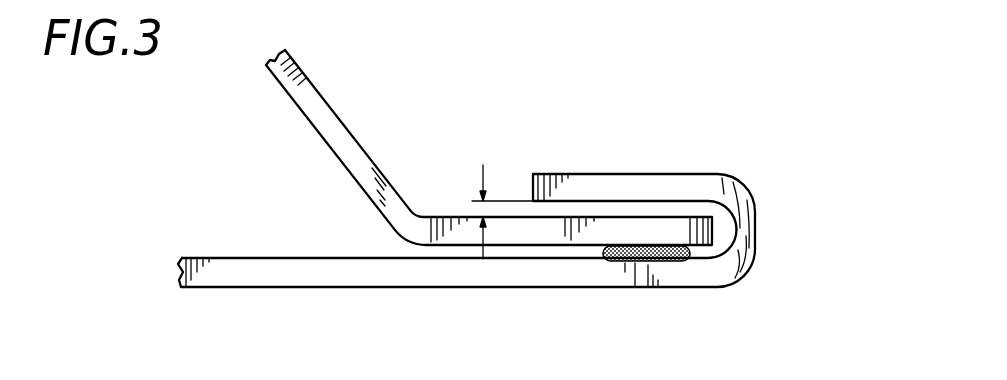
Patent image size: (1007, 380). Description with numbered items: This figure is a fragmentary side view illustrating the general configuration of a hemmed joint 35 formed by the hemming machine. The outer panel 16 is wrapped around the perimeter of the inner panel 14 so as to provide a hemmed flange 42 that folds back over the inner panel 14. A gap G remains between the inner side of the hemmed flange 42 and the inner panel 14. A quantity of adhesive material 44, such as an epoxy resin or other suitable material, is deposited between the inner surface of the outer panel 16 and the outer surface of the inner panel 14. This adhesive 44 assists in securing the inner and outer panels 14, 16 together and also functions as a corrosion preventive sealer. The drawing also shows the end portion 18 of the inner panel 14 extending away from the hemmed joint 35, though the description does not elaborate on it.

The inner panel 14 is at (345, 148).
The outer panel 16 is at (332, 287).
The arm end 18 is at (317, 90).
The hemmed joint 35 is at (805, 117).
The hemmed flange 42 is at (657, 187).
The adhesive material 44 is at (645, 253).
The gap G is at (478, 208).